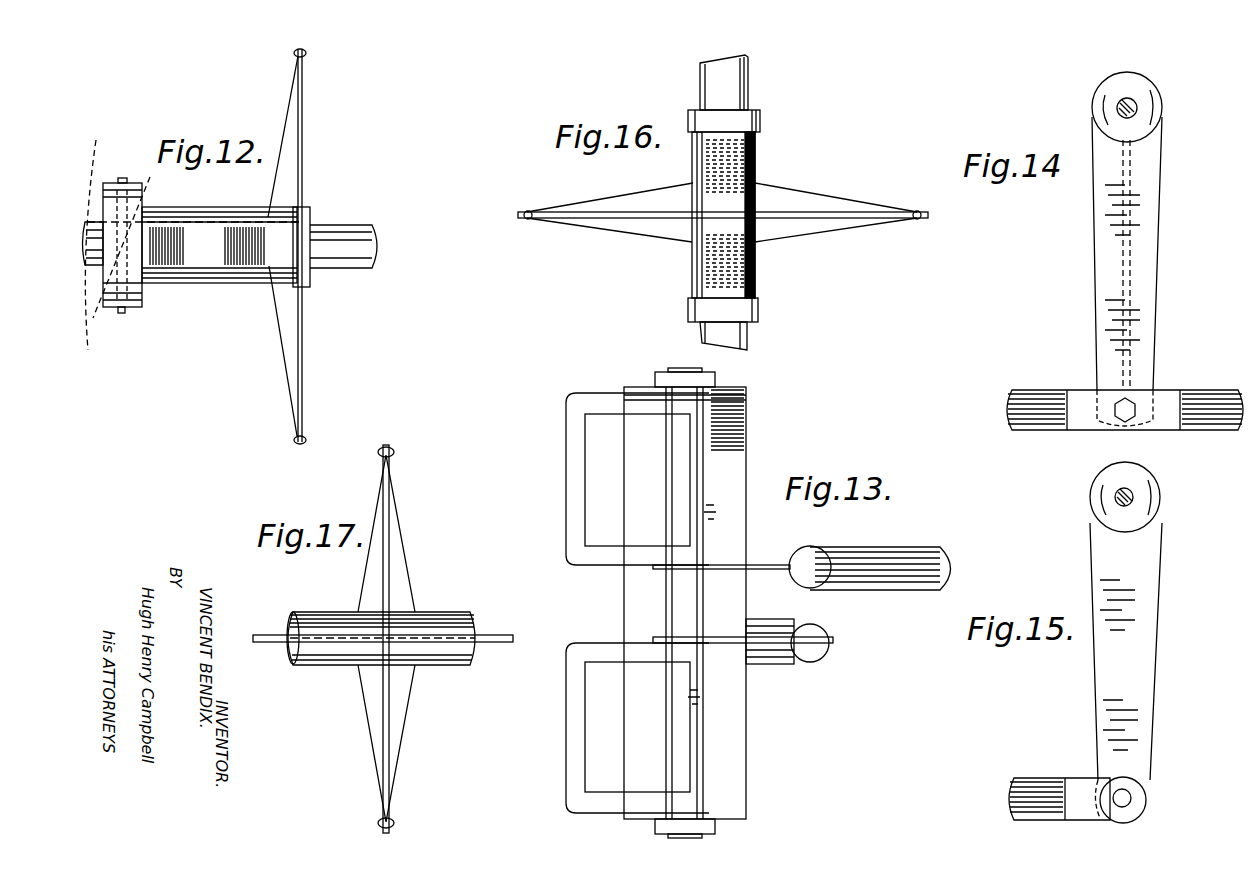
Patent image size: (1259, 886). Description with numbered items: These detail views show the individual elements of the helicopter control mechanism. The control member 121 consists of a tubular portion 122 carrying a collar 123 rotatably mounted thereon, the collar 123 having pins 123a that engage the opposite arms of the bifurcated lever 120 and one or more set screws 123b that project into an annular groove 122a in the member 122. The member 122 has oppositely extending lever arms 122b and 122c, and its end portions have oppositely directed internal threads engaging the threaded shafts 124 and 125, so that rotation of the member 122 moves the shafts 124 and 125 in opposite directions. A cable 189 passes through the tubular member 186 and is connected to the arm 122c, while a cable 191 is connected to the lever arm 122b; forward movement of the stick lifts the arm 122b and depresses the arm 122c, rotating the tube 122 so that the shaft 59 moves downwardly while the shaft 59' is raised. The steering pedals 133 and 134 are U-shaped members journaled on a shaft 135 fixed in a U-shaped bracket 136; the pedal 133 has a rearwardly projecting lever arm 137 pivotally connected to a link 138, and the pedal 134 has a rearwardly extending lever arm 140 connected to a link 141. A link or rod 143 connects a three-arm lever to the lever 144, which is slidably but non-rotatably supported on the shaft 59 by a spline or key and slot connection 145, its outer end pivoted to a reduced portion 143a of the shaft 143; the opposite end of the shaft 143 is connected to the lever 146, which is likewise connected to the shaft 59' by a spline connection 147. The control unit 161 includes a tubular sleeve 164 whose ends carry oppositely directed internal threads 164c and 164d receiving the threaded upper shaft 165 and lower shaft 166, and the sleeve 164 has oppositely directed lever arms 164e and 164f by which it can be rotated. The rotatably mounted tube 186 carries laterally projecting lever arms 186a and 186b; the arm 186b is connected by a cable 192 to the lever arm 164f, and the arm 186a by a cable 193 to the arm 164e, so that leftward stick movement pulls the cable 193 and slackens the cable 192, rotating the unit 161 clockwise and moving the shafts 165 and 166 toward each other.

In FIG. 12, the lever 120 is at (130, 183).
In FIG. 12, the control member 121 is at (325, 190).
In FIG. 12, the tubular portion 122 is at (256, 196).
In FIG. 12, the annular groove 122a is at (145, 242).
In FIG. 12, the lever arm 122b is at (303, 143).
In FIG. 12, the lever arm 122c is at (303, 390).
In FIG. 12, the collar 123 is at (142, 292).
In FIG. 12, the pins 123a is at (122, 313).
In FIG. 12, the set screws 123b is at (88, 350).
In FIG. 12, the shaft 124 is at (107, 237).
In FIG. 12, the shaft 125 is at (337, 232).
In FIG. 12, the cable 189 is at (304, 430).
In FIG. 17, the cable 189 is at (495, 642).
In FIG. 12, the cable 191 is at (304, 54).
In FIG. 16, the cable 192 is at (530, 220).
In FIG. 17, the cable 192 is at (378, 823).
In FIG. 16, the cable 193 is at (915, 222).
In FIG. 17, the cable 193 is at (393, 452).
In FIG. 16, the control unit 161 is at (779, 179).
In FIG. 16, the tubular sleeve 164 is at (760, 137).
In FIG. 16, the internal threads 164c is at (690, 155).
In FIG. 16, the internal threads 164d is at (690, 267).
In FIG. 16, the lever arm 164e is at (825, 215).
In FIG. 16, the lever arm 164f is at (597, 177).
In FIG. 16, the upper shaft 165 is at (748, 85).
In FIG. 16, the threaded shaft 166 is at (707, 332).
In FIG. 13, the pedal 133 is at (570, 782).
In FIG. 13, the pedal 134 is at (568, 557).
In FIG. 13, the shaft 135 is at (692, 451).
In FIG. 13, the U-shaped bracket 136 is at (730, 759).
In FIG. 13, the lever arm 137 is at (728, 643).
In FIG. 13, the link 138 is at (802, 606).
In FIG. 13, the lever arm 140 is at (752, 565).
In FIG. 13, the link 141 is at (914, 534).
In FIG. 17, the tubular member 186 is at (340, 598).
In FIG. 17, the lever arm 186a is at (385, 537).
In FIG. 17, the lever arm 186b is at (385, 732).
In FIG. 14, the shaft 59 is at (1157, 91).
In FIG. 15, the shaft 59' is at (1158, 490).
In FIG. 14, the link or rod 143 is at (1243, 370).
In FIG. 15, the link or rod 143 is at (1045, 757).
In FIG. 14, the reduced portion 143a is at (1158, 420).
In FIG. 14, the lever 144 is at (1153, 308).
In FIG. 14, the spline, or key and slot connection 145 is at (1133, 117).
In FIG. 15, the lever 146 is at (1147, 695).
In FIG. 15, the spline, or key and slot connection 147 is at (1133, 510).